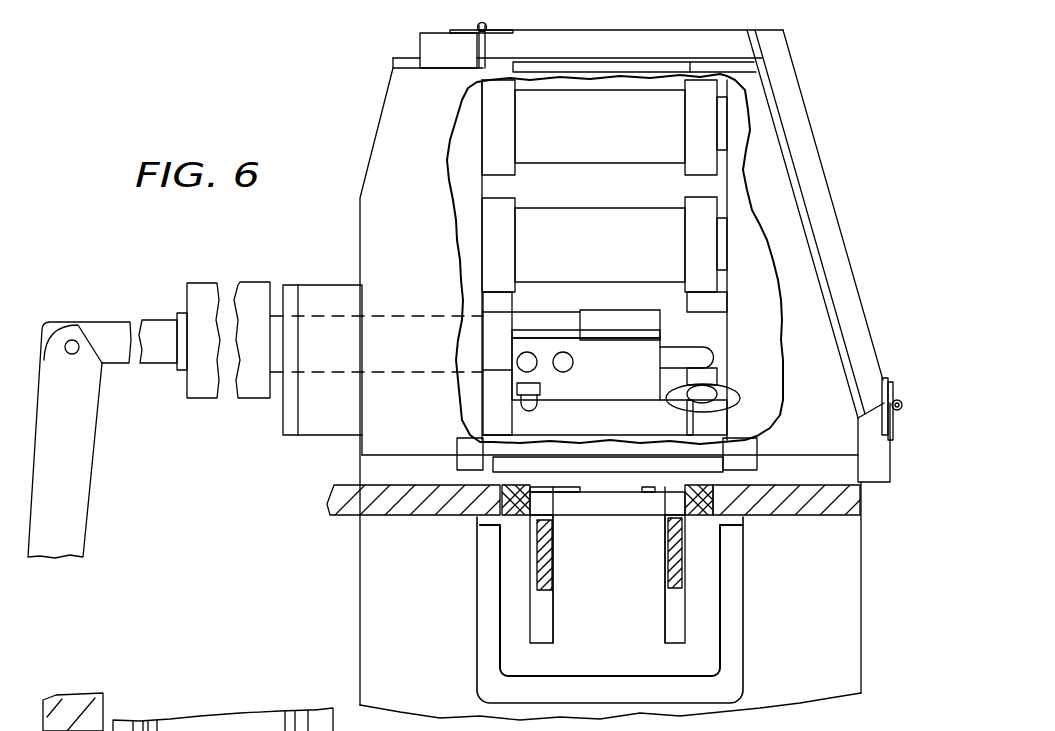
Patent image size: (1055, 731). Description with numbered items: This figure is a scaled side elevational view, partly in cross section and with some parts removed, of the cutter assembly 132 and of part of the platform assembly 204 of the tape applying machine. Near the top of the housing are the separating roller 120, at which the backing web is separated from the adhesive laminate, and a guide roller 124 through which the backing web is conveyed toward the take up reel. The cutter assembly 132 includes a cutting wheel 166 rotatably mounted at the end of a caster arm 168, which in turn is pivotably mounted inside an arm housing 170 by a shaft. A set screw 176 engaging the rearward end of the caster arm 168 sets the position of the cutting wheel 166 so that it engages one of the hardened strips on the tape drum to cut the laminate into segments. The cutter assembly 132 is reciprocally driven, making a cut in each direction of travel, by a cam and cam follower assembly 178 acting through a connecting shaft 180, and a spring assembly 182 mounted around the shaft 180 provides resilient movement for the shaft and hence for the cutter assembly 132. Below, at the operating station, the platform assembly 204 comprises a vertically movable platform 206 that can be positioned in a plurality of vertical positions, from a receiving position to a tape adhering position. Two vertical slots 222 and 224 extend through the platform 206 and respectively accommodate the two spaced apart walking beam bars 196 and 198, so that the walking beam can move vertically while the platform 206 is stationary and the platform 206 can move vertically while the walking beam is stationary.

The separating roller 120 is at (618, 261).
The guide roller 124 is at (618, 140).
The cutter assembly 132 is at (753, 392).
The cutting wheel 166 is at (735, 403).
The caster arm 168 is at (720, 358).
The arm housing 170 is at (568, 410).
The set screw 176 is at (541, 396).
The cam and cam follower assembly 178 is at (99, 511).
The connecting shaft 180 is at (160, 318).
The spring assembly 182 is at (215, 279).
The walking beam bar 196 is at (677, 590).
The walking beam bar 198 is at (538, 591).
The platform assembly 204 is at (496, 659).
The platform 206 is at (720, 652).
The vertical slot 222 is at (672, 627).
The vertical slot 224 is at (553, 630).